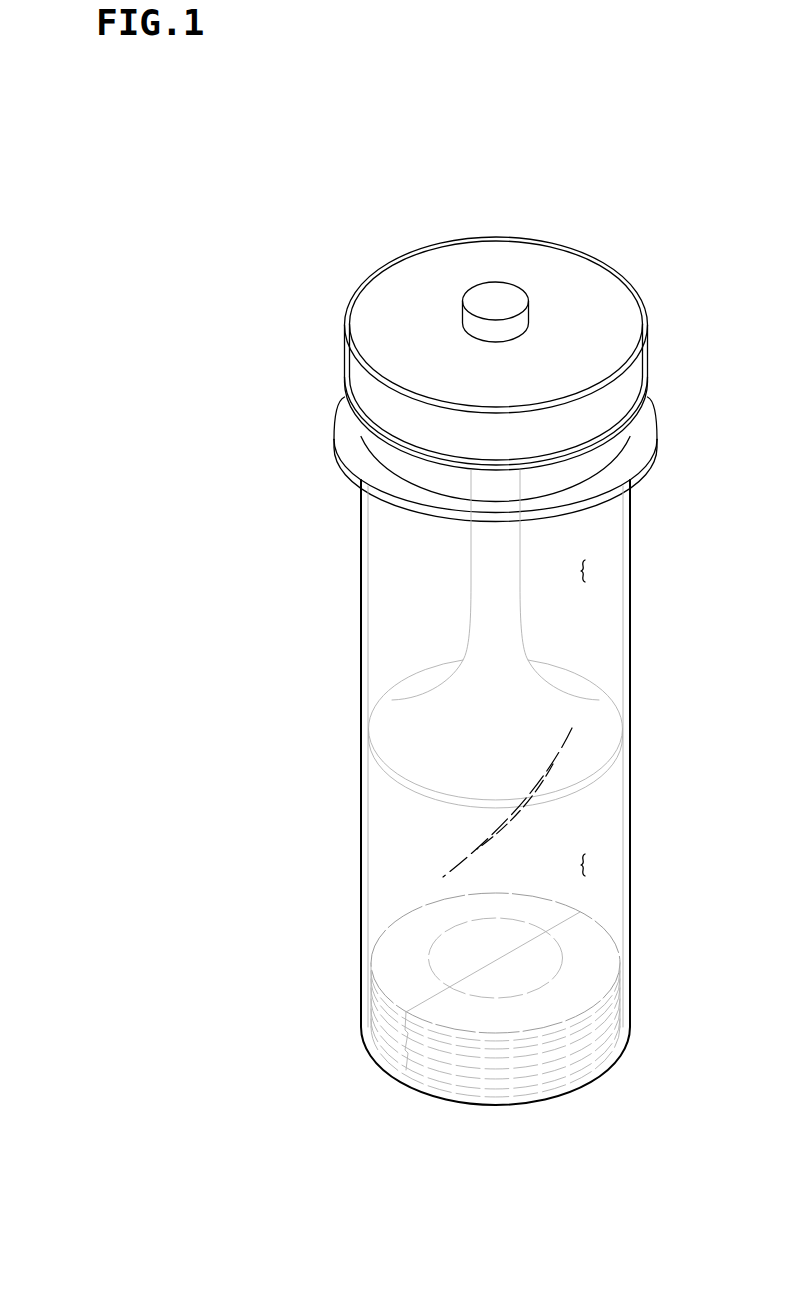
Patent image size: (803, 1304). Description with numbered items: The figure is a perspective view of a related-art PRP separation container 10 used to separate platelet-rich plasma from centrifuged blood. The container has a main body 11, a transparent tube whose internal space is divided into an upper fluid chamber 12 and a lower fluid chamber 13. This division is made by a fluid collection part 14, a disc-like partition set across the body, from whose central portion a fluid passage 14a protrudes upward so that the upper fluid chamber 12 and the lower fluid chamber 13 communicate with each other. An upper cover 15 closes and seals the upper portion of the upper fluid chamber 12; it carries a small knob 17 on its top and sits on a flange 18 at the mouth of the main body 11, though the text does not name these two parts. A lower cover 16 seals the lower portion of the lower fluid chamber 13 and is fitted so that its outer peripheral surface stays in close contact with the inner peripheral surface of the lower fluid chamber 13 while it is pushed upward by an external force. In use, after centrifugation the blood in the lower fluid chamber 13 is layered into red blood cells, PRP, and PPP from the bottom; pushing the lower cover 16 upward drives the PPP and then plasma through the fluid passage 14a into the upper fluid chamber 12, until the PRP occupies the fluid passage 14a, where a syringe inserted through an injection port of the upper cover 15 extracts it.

The PRP separation container 10 is at (627, 192).
The main body 11 is at (628, 636).
The upper fluid chamber 12 is at (586, 572).
The lower fluid chamber 13 is at (586, 865).
The fluid collection part 14 is at (415, 703).
The fluid passage 14a is at (478, 568).
The upper cover 15 is at (640, 373).
The lower cover 16 is at (593, 967).
The knob 17 is at (496, 290).
The flange 18 is at (643, 430).